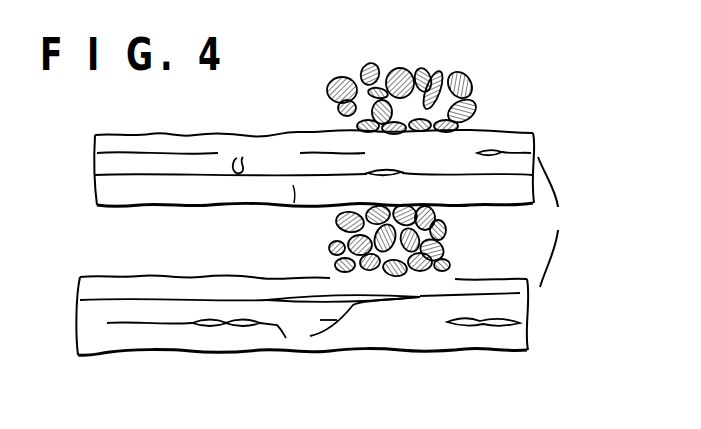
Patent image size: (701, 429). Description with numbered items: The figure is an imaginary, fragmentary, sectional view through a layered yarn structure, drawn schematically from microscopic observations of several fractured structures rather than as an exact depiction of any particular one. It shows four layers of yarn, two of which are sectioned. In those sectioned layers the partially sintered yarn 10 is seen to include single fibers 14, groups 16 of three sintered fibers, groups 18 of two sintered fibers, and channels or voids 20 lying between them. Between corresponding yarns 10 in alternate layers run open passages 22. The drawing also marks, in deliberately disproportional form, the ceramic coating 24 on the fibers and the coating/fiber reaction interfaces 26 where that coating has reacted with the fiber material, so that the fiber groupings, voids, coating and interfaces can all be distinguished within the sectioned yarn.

The partially sintered yarn 10 is at (482, 79).
The single fibers 14 is at (368, 63).
The groups of three sintered fibers 16 is at (397, 70).
The groups of two sintered fibers 18 is at (478, 108).
The channels or voids 20 is at (413, 112).
The open passages 22 is at (183, 251).
The ceramic coating 24 is at (340, 127).
The coating/fiber reaction interfaces 26 is at (415, 72).